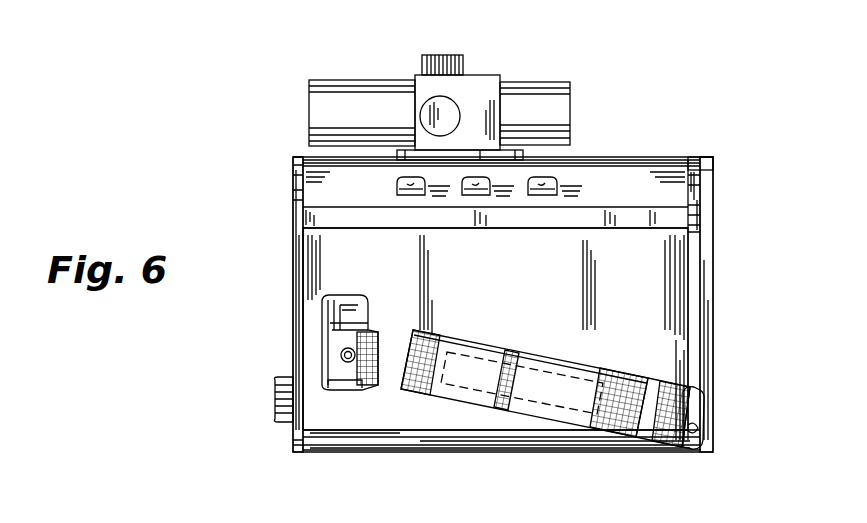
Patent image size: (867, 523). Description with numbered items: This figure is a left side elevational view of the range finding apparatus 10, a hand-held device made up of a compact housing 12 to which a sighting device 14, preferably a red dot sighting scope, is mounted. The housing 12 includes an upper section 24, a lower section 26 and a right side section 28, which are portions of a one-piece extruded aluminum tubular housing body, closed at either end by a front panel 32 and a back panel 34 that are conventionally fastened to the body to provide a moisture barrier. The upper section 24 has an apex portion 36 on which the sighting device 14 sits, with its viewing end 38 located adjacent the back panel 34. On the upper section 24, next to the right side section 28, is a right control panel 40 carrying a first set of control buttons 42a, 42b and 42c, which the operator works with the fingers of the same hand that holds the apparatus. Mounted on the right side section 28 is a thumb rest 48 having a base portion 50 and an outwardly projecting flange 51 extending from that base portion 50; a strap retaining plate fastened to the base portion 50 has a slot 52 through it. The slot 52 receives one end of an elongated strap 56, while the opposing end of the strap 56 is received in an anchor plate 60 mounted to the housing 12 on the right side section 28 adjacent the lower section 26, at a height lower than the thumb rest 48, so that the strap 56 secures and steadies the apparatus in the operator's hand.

The range finding apparatus 10 is at (717, 99).
The housing 12 is at (663, 250).
The sighting device 14 is at (548, 83).
The upper section 24 is at (600, 160).
The lower section 26 is at (480, 452).
The right side section 28 is at (655, 282).
The front panel 32 is at (713, 318).
The back panel 34 is at (293, 300).
The apex portion 36 is at (305, 160).
The viewing end 38 is at (310, 97).
The right control panel 40 is at (700, 158).
The control button 42a is at (405, 197).
The control button 42b is at (472, 197).
The control button 42c is at (548, 197).
The thumb rest 48 is at (327, 340).
The base portion 50 is at (345, 378).
The outwardly projecting flange 51 is at (323, 372).
The slot 52 is at (368, 368).
The elongated strap 56 is at (600, 350).
The anchor plate 60 is at (703, 415).